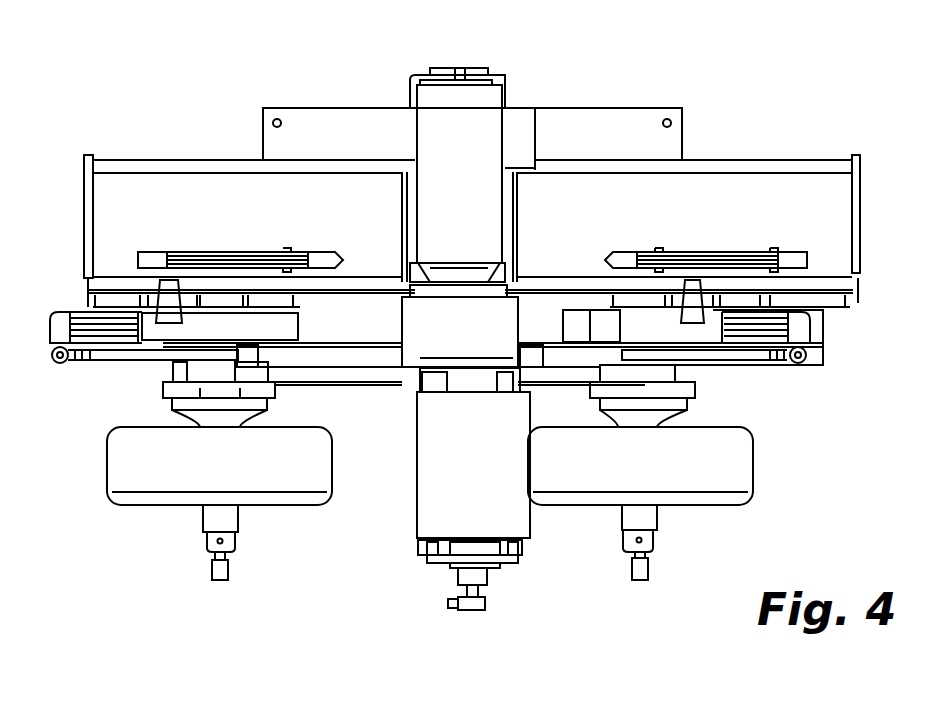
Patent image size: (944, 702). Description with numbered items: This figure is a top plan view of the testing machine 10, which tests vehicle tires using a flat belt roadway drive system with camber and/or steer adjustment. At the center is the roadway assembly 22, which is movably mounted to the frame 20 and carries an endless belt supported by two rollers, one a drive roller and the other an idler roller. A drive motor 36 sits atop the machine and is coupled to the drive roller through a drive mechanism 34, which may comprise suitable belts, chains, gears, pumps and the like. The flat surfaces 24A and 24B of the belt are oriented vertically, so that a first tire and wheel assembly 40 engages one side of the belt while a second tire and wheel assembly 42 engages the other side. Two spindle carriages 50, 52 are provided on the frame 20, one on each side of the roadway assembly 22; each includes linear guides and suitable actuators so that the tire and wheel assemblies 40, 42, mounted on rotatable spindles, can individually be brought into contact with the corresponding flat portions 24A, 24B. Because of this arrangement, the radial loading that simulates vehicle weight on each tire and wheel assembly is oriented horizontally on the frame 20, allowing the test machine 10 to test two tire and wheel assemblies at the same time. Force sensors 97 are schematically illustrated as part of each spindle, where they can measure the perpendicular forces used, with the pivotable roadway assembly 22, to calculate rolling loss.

The testing machine 10 is at (655, 96).
The frame 20 is at (742, 140).
The roadway assembly 22 is at (440, 575).
The flat surface of the roadway assembly belt 24A is at (528, 518).
The flat surface of the roadway assembly belt 24B is at (418, 480).
The drive mechanism 34 is at (400, 333).
The drive motor 36 is at (495, 100).
The first tire and wheel assembly 40 is at (695, 516).
The second tire and wheel assembly 42 is at (252, 520).
The spindle carriage 50 is at (830, 336).
The spindle carriage 52 is at (76, 372).
The force sensors 97 is at (175, 405).